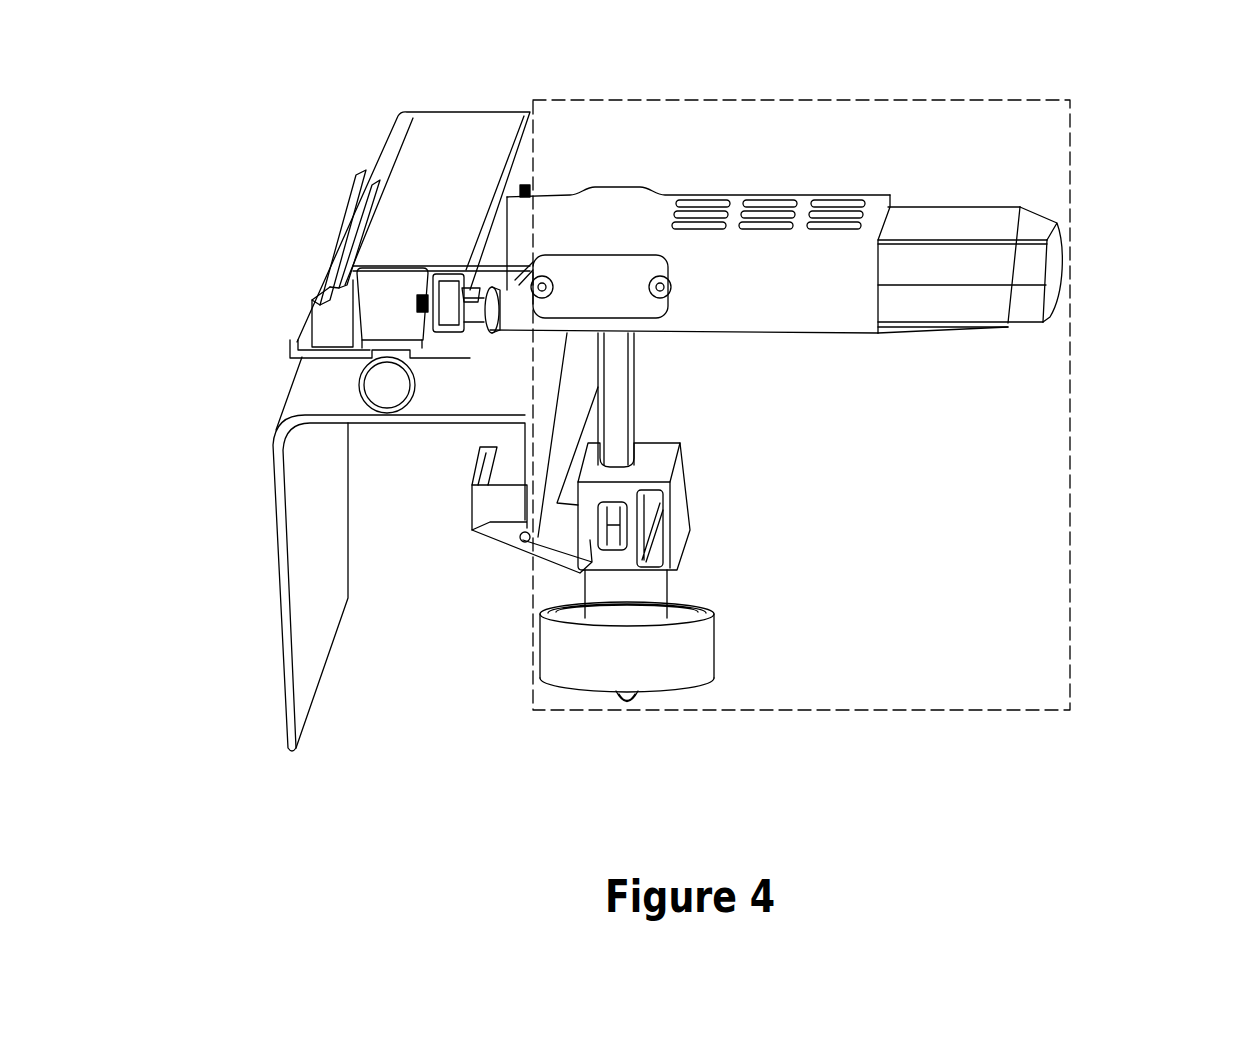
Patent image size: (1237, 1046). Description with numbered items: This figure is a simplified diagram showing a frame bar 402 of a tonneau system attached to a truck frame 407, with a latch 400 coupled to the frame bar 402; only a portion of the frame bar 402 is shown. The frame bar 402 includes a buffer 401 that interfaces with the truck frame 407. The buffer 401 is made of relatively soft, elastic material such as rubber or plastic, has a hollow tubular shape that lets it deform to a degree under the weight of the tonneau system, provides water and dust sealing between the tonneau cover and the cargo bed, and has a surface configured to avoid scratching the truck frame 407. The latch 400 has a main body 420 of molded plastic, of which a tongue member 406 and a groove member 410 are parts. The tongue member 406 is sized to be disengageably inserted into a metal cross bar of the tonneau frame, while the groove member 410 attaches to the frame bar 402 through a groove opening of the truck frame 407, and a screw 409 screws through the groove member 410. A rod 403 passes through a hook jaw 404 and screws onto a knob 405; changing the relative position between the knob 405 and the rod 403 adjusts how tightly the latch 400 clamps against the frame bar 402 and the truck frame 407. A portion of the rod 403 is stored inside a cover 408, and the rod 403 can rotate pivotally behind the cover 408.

The latch 400 is at (733, 100).
The buffer 401 is at (353, 385).
The frame bar 402 is at (450, 128).
The rod 403 is at (623, 393).
The hook jaw 404 is at (678, 505).
The knob 405 is at (708, 647).
The tongue member 406 is at (1057, 232).
The truck frame 407 is at (290, 577).
The cover 408 is at (607, 278).
The screw 409 is at (492, 317).
The groove member 410 is at (452, 317).
The main body 420 is at (787, 227).